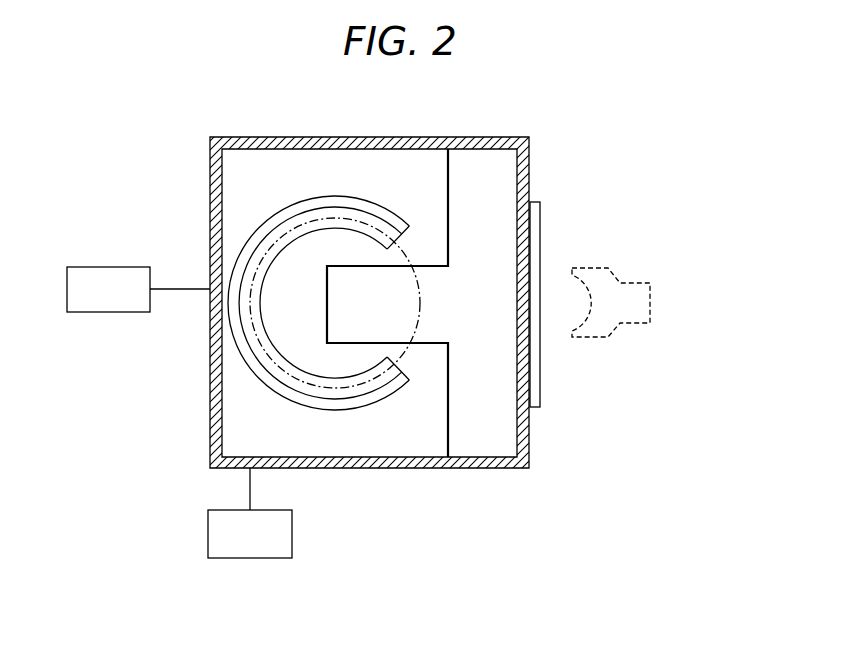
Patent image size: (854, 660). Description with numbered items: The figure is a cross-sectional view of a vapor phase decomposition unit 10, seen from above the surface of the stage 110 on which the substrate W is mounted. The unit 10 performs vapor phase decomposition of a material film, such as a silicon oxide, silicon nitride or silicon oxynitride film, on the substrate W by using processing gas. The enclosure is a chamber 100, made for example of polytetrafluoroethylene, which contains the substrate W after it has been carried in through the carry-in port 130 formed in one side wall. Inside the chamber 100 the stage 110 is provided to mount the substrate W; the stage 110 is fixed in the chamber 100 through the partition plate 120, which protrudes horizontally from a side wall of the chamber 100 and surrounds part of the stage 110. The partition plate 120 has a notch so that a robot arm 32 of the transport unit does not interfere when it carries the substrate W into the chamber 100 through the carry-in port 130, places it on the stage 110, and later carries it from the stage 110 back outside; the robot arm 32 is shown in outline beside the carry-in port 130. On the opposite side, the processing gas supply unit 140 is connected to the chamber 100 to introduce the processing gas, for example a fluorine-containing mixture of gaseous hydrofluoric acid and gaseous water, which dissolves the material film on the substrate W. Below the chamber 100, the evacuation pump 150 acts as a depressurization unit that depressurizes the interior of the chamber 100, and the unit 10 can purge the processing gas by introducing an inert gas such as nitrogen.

The vapor phase decomposition unit 10 is at (580, 153).
The chamber 100 is at (530, 438).
The stage 110 is at (335, 196).
The partition plate 120 is at (452, 172).
The carry-in port 130 is at (541, 227).
The processing gas supply unit 140 is at (113, 267).
The evacuation pump 150 is at (292, 535).
The robot arm 32 is at (652, 302).
The substrate W is at (418, 240).